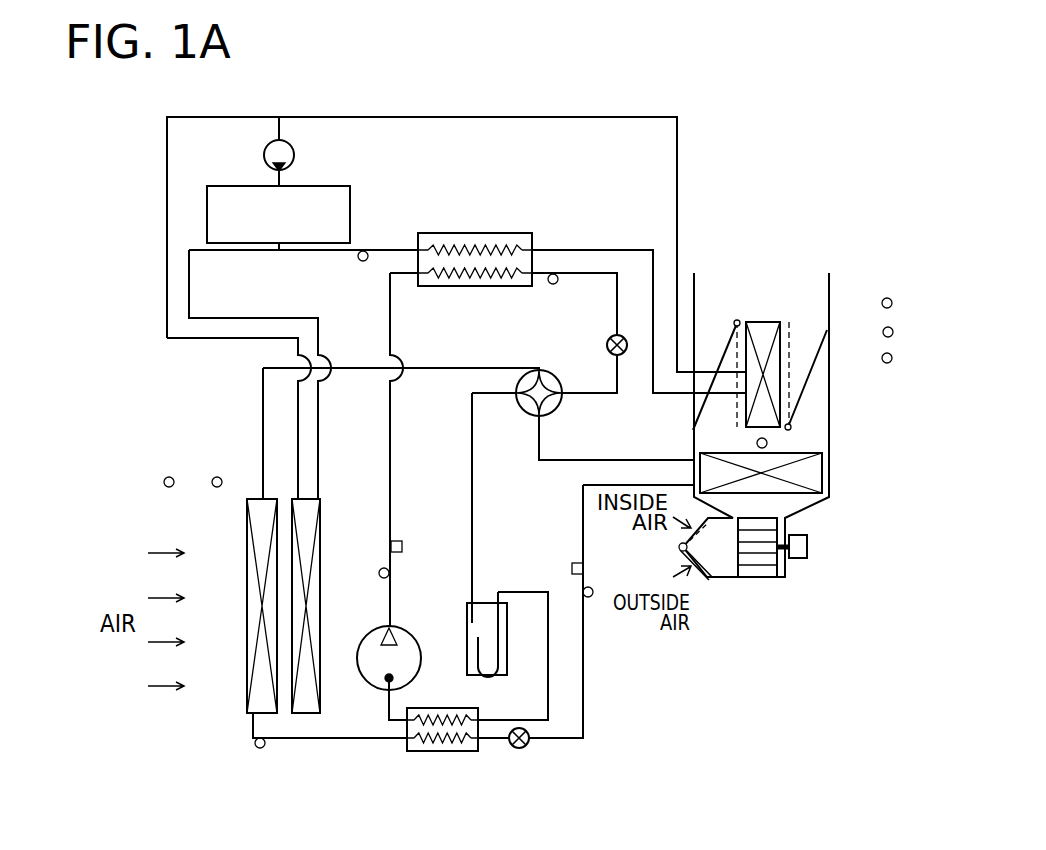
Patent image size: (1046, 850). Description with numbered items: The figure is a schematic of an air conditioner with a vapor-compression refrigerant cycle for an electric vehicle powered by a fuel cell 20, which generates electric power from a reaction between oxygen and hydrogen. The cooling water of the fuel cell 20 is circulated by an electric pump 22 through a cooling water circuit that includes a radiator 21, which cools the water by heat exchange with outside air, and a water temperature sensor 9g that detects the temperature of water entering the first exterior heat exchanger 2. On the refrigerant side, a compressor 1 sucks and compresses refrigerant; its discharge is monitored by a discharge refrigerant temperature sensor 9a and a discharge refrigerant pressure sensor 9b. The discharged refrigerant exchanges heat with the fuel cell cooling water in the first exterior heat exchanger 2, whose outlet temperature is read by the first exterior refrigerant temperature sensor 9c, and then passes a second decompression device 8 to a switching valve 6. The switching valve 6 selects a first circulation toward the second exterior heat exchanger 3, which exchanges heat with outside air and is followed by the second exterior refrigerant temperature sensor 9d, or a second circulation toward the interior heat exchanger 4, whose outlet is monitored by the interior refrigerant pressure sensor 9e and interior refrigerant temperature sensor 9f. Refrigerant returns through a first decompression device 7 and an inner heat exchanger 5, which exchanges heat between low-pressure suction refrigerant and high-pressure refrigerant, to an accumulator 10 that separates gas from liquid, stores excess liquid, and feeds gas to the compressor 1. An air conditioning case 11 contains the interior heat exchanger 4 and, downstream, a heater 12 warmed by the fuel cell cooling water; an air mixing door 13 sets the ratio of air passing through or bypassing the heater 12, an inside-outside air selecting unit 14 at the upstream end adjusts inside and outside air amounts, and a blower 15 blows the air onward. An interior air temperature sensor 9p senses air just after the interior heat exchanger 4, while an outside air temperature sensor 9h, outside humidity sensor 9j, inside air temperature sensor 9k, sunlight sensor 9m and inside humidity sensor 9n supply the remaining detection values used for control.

The compressor 1 is at (412, 640).
The first exterior heat exchanger 2 is at (475, 233).
The second exterior heat exchanger 3 is at (248, 550).
The interior heat exchanger 4 is at (810, 480).
The inner heat exchanger 5 is at (465, 752).
The switching valve 6 is at (560, 410).
The first decompression device 7 is at (519, 748).
The second decompression device 8 is at (625, 338).
The discharge refrigerant temperature sensor 9a is at (384, 568).
The discharge refrigerant pressure sensor 9b is at (400, 540).
The first exterior refrigerant temperature sensor 9c is at (553, 285).
The second exterior refrigerant temperature sensor 9d is at (262, 748).
The interior refrigerant pressure sensor 9e is at (572, 563).
The interior refrigerant temperature sensor 9f is at (590, 597).
The water temperature sensor 9g is at (363, 262).
The outside air temperature sensor 9h is at (217, 477).
The outside humidity sensor 9j is at (169, 477).
The inside air temperature sensor 9k is at (882, 303).
The sunlight sensor 9m is at (888, 327).
The inside humidity sensor 9n is at (882, 358).
The interior air temperature sensor 9p is at (768, 441).
The accumulator 10 is at (507, 640).
The air conditioning case 11 is at (829, 423).
The heater 12 is at (780, 387).
The air mixing door 13 is at (812, 357).
The inside-outside air selecting unit 14 is at (679, 547).
The blower 15 is at (797, 558).
The fuel cell 20 is at (350, 210).
The radiator 21 is at (320, 598).
The pump 22 is at (294, 155).